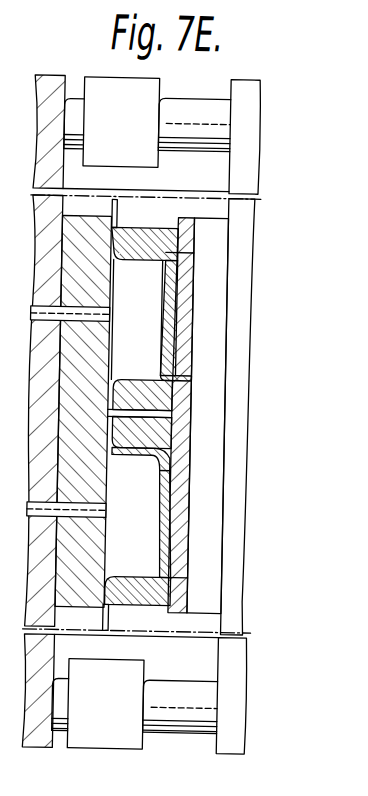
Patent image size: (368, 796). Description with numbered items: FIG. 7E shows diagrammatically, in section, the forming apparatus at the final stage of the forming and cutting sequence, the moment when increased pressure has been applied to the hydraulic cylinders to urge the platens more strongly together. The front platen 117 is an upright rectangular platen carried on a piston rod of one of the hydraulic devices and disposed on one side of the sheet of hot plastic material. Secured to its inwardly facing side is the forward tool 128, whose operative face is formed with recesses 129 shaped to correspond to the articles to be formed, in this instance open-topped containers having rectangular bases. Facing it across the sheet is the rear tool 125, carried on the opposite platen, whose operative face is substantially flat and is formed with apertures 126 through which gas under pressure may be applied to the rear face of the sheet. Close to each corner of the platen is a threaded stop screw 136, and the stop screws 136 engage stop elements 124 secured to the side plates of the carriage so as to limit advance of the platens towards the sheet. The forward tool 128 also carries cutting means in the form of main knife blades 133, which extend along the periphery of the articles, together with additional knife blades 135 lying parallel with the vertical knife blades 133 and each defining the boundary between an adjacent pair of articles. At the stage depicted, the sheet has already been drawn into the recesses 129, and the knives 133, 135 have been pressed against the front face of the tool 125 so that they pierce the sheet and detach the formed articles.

The platen 117 is at (237, 332).
The stop element 124 is at (136, 128).
The tool 125 is at (88, 471).
The aperture 126 is at (130, 490).
The tool 128 is at (223, 304).
The recess 129 is at (133, 292).
The main knife blade 133 is at (146, 228).
The additional knife blade 135 is at (143, 390).
The stop screw 136 is at (74, 104).